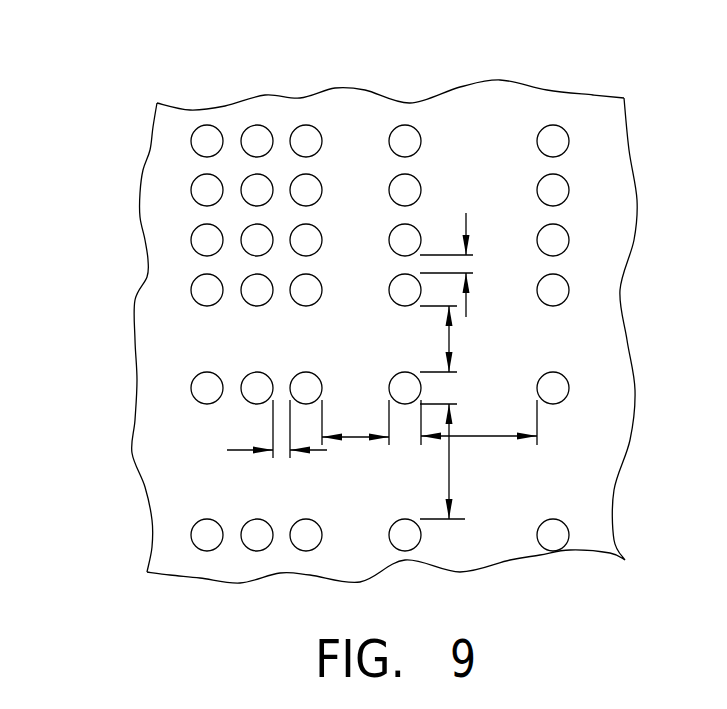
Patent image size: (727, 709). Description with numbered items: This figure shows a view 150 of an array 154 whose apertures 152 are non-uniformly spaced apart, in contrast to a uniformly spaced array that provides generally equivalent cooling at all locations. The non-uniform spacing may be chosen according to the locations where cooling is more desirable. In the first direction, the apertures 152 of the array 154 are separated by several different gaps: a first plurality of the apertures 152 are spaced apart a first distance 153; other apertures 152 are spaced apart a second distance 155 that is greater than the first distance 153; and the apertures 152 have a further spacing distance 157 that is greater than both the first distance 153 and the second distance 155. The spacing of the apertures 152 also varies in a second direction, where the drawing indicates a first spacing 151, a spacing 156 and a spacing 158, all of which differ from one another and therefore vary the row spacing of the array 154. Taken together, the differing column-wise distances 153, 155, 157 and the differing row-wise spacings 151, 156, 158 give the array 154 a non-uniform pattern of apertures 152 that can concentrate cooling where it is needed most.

The perforated sheet / plate 150 is at (567, 48).
The first spacing 151 is at (467, 220).
The apertures 152 is at (395, 253).
The first distance 153 is at (238, 451).
The array 154 is at (165, 163).
The second distance 155 is at (355, 438).
The spacing 156 is at (451, 338).
The further spacing distance 157 is at (477, 436).
The spacing 158 is at (451, 461).